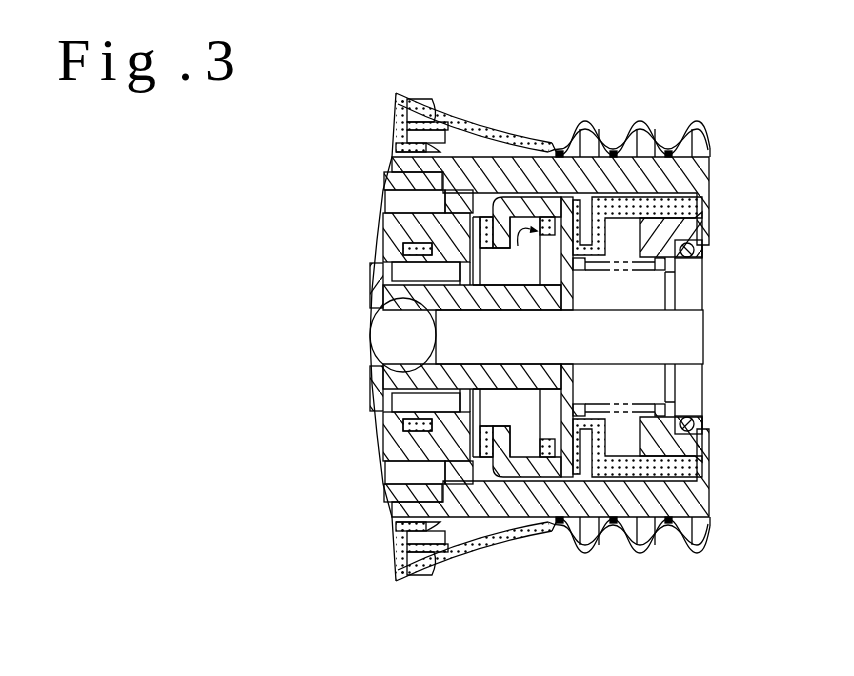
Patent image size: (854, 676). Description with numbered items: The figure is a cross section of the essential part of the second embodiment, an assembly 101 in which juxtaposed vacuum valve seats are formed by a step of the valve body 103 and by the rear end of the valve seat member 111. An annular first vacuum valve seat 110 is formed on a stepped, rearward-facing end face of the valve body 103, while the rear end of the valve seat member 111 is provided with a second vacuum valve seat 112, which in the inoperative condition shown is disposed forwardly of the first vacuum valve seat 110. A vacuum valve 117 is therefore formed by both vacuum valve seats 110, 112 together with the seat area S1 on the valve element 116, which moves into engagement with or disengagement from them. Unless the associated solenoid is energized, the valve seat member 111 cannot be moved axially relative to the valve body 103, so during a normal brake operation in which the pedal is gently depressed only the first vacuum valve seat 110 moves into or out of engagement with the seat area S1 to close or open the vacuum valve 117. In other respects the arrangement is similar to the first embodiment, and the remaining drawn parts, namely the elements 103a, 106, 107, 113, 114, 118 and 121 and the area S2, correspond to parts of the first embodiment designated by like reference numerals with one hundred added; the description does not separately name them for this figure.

The constant velocity universal joint 101 is at (592, 110).
The valve body 103 is at (379, 232).
The outer joint member cover 103a is at (637, 178).
The boot bellows 106 is at (612, 520).
The shaft 107 is at (682, 335).
The first vacuum valve seat 110 is at (477, 218).
The valve seat member 111 is at (398, 392).
The second vacuum valve seat 112 is at (468, 250).
The cage end 113 is at (387, 383).
The seal member 114 is at (545, 252).
The valve element 116 is at (550, 200).
The vacuum valve 117 is at (490, 228).
The retaining ring 118 is at (380, 228).
The chamber 121 is at (510, 337).
The seat area S1 is at (505, 195).
The second sealed space S2 is at (553, 257).